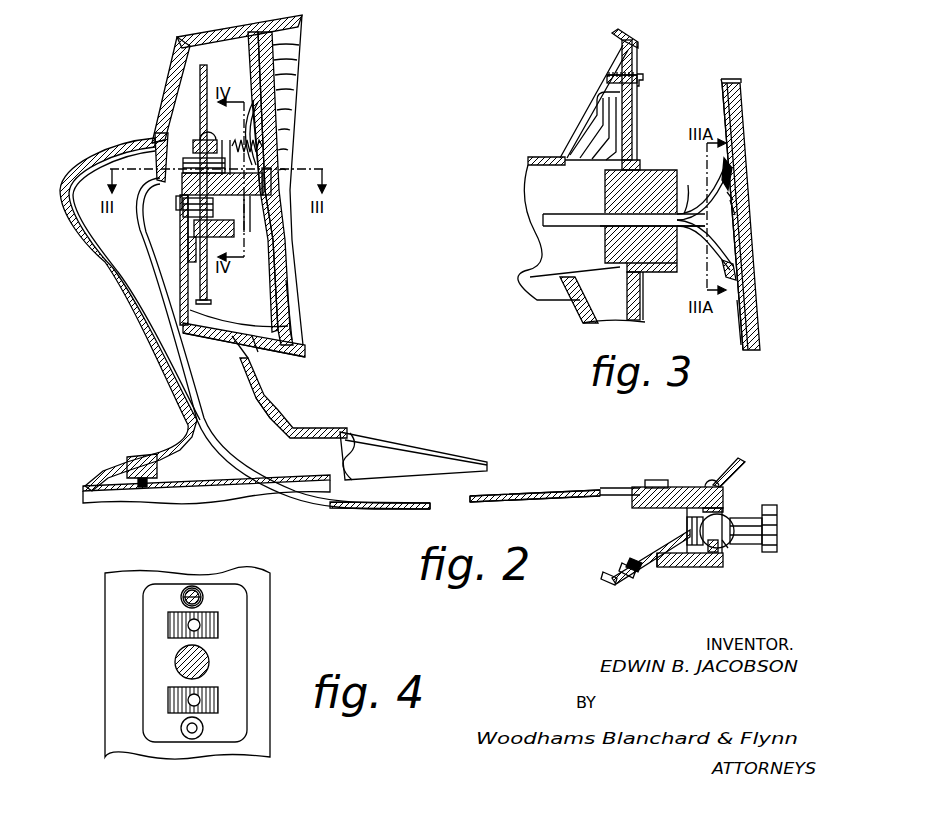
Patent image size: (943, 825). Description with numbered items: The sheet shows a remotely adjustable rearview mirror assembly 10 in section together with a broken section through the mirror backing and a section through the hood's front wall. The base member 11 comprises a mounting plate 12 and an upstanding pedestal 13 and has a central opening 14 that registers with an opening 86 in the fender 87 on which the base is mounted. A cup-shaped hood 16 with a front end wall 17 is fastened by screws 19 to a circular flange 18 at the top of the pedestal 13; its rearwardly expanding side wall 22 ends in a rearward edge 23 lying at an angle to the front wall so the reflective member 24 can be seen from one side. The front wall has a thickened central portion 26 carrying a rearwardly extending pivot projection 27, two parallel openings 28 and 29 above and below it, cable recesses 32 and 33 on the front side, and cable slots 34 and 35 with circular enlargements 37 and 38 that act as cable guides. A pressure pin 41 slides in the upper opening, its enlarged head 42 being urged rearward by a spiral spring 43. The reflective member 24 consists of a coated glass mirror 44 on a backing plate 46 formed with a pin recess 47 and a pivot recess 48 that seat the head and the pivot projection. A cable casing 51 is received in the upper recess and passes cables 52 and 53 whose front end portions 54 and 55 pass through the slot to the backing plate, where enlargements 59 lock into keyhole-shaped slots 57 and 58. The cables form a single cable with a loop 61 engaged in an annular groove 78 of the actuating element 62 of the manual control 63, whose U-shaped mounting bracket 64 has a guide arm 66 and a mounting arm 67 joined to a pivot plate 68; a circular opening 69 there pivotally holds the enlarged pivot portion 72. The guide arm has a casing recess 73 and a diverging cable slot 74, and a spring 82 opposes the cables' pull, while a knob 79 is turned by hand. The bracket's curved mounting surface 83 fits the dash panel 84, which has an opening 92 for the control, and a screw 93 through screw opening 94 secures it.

In FIG. 2, the rearview mirror assembly 10 is at (355, 320).
In FIG. 2, the base member 11 is at (158, 371).
In FIG. 2, the mounting plate 12 is at (356, 441).
In FIG. 2, the pedestal 13 is at (276, 392).
In FIG. 3, the pedestal 13 is at (552, 281).
In FIG. 2, the central opening 14 is at (254, 424).
In FIG. 2, the hood 16 is at (303, 67).
In FIG. 2, the front end wall 17 is at (185, 96).
In FIG. 3, the front end wall 17 is at (638, 112).
In FIG. 4, the front end wall 17 is at (262, 607).
In FIG. 2, the circular flange 18 is at (250, 357).
In FIG. 3, the circular flange 18 is at (595, 105).
In FIG. 3, the screws 19 is at (641, 82).
In FIG. 2, the side wall 22 is at (305, 350).
In FIG. 2, the rearward edge 23 is at (292, 322).
In FIG. 2, the reflective member 24 is at (291, 243).
In FIG. 3, the reflective member 24 is at (746, 105).
In FIG. 2, the thickened central portion 26 is at (182, 205).
In FIG. 3, the thickened central portion 26 is at (605, 180).
In FIG. 4, the thickened central portion 26 is at (178, 583).
In FIG. 2, the pivot projection 27 is at (266, 183).
In FIG. 3, the pivot projection 27 is at (696, 240).
In FIG. 2, the opening 28 is at (200, 135).
In FIG. 4, the opening 28 is at (200, 590).
In FIG. 2, the opening 29 is at (190, 262).
In FIG. 4, the opening 29 is at (192, 736).
In FIG. 2, the cable recess 32 is at (152, 142).
In FIG. 2, the cable recess 33 is at (176, 203).
In FIG. 2, the cable slot 34 is at (182, 185).
In FIG. 3, the cable slot 34 is at (600, 215).
In FIG. 4, the cable slot 34 is at (205, 622).
In FIG. 2, the cable slot 35 is at (188, 232).
In FIG. 4, the cable slot 35 is at (180, 690).
In FIG. 2, the enlargement 37 is at (226, 140).
In FIG. 4, the enlargement 37 is at (186, 625).
In FIG. 2, the enlargement 38 is at (226, 233).
In FIG. 4, the enlargement 38 is at (208, 700).
In FIG. 2, the pressure pin 41 is at (193, 147).
In FIG. 4, the pressure pin 41 is at (180, 597).
In FIG. 2, the enlarged head 42 is at (263, 142).
In FIG. 2, the spiral spring 43 is at (263, 158).
In FIG. 4, the spiral spring 43 is at (178, 612).
In FIG. 2, the coated glass mirror 44 is at (260, 100).
In FIG. 3, the coated glass mirror 44 is at (752, 243).
In FIG. 2, the backing plate 46 is at (300, 272).
In FIG. 3, the backing plate 46 is at (743, 328).
In FIG. 2, the pin recess 47 is at (258, 137).
In FIG. 2, the pivot recess 48 is at (262, 210).
In FIG. 3, the pivot recess 48 is at (750, 200).
In FIG. 2, the cable casing 51 is at (226, 462).
In FIG. 3, the cable casing 51 is at (580, 226).
In FIG. 2, the cable 52 is at (433, 508).
In FIG. 3, the cable 52 is at (700, 205).
In FIG. 2, the cable 53 is at (470, 501).
In FIG. 3, the cable 53 is at (686, 245).
In FIG. 3, the front end portion 54 is at (688, 185).
In FIG. 3, the front end portion 55 is at (654, 264).
In FIG. 3, the keyhole-shaped slot 57 is at (745, 165).
In FIG. 3, the keyhole-shaped slot 58 is at (738, 270).
In FIG. 3, the enlargements 59 is at (745, 180).
In FIG. 2, the loop 61 is at (687, 510).
In FIG. 2, the actuating element 62 is at (742, 518).
In FIG. 2, the manual control 63 is at (700, 572).
In FIG. 2, the mounting bracket 64 is at (688, 487).
In FIG. 2, the guide arm 66 is at (675, 487).
In FIG. 2, the mounting arm 67 is at (692, 548).
In FIG. 2, the pivot plate 68 is at (726, 545).
In FIG. 2, the circular opening 69 is at (722, 514).
In FIG. 2, the enlarged pivot portion 72 is at (713, 552).
In FIG. 2, the casing recess 73 is at (631, 487).
In FIG. 2, the cable slot 74 is at (647, 481).
In FIG. 2, the annular groove 78 is at (698, 560).
In FIG. 2, the knob 79 is at (772, 517).
In FIG. 2, the spring 82 is at (712, 485).
In FIG. 2, the mounting surface 83 is at (610, 582).
In FIG. 2, the dash panel 84 is at (735, 468).
In FIG. 2, the opening 86 is at (230, 478).
In FIG. 2, the fender 87 is at (175, 480).
In FIG. 2, the opening 92 is at (670, 534).
In FIG. 2, the screw 93 is at (636, 560).
In FIG. 2, the screw opening 94 is at (637, 575).